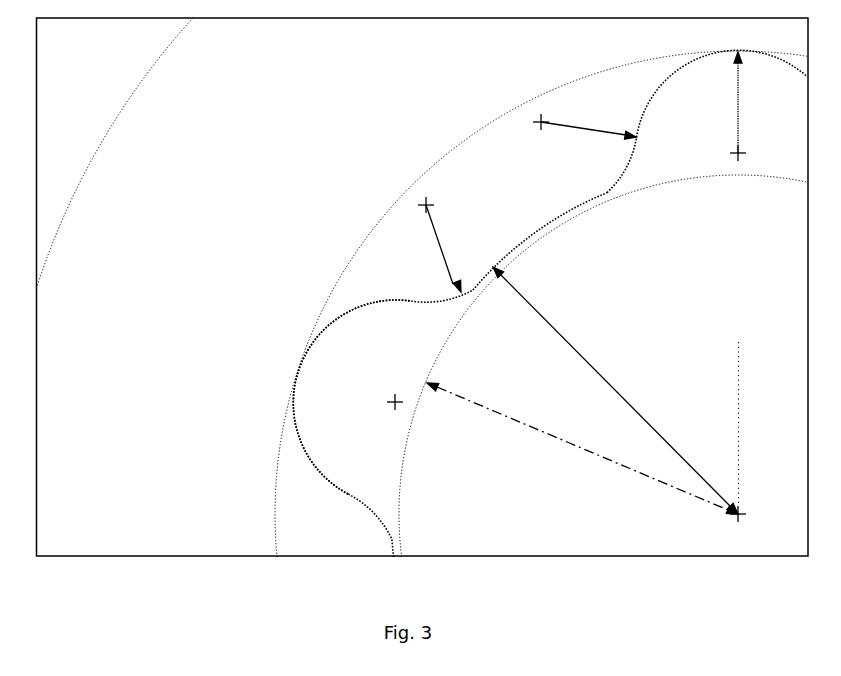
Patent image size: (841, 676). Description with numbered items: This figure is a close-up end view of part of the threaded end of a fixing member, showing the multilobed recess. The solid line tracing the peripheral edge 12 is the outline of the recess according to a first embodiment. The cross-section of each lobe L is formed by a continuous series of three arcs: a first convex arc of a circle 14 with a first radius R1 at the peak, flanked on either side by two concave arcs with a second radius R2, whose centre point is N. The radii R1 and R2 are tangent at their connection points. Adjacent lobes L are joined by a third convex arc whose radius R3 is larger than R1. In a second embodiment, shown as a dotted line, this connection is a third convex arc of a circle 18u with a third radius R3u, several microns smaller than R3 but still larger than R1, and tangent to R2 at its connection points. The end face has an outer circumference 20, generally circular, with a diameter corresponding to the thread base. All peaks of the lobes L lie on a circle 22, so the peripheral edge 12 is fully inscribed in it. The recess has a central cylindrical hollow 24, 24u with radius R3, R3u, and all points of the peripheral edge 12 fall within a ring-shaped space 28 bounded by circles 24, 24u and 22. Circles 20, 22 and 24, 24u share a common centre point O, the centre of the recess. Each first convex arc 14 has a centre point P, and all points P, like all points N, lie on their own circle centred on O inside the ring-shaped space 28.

The peripheral edge 12 is at (303, 476).
The first convex arc of a circle 14 is at (683, 65).
The third convex arc of a circle 18u is at (530, 242).
The outer circumference 20 is at (160, 55).
The circle 22 is at (363, 242).
The central cylindrical hollow 24 is at (590, 197).
The central cylindrical hollow 24u is at (665, 180).
The ring-shaped space 28 is at (366, 280).
The lobe L is at (291, 408).
The centre point P is at (576, 290).
The centre point N is at (483, 162).
The centre point O is at (737, 444).
The first radius R1 is at (758, 102).
The second radius R2 is at (531, 192).
The third radius R3 is at (615, 390).
The third radius R3u is at (582, 448).